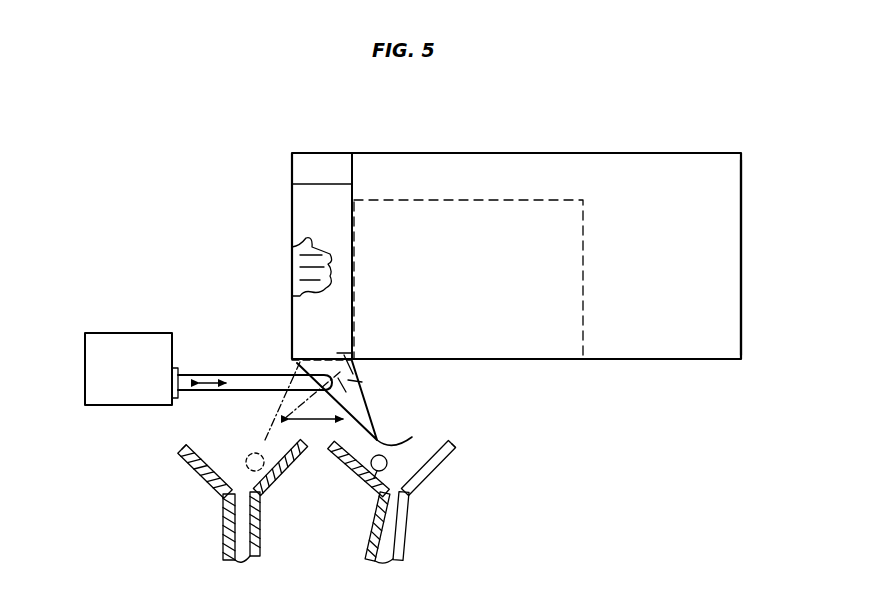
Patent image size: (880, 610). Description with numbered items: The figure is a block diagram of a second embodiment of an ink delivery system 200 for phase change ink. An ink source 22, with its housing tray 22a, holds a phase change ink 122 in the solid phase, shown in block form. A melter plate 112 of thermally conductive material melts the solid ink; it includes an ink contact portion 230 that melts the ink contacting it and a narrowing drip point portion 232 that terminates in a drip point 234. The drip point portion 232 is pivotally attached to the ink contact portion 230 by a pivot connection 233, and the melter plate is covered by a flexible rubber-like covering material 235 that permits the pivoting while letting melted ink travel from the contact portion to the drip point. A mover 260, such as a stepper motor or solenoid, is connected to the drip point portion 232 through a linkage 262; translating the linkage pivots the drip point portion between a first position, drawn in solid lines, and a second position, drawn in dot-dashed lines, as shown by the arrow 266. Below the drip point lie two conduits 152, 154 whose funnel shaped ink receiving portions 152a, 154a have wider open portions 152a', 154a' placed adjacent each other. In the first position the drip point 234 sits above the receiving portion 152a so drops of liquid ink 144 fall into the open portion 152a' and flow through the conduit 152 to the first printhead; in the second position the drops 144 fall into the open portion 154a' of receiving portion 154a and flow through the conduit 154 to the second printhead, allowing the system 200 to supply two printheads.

The ink delivery system 200 is at (167, 126).
The ink source 22 is at (735, 152).
The tray 22a is at (741, 212).
The melter plate 112 is at (323, 177).
The cyan phase change ink 122 is at (490, 292).
The ink contact portion 230 is at (292, 273).
The pivot connection 233 is at (355, 360).
The covering material 235 is at (356, 385).
The drip point portion 232 is at (370, 413).
The drip point 234 is at (411, 431).
The mover 260 is at (148, 376).
The linkage 262 is at (244, 380).
The arrow 266 is at (332, 421).
The second conduit 154 is at (208, 506).
The ink receiving portion of second conduit 154a is at (170, 475).
The open portion of second conduit receiving portion 154a' is at (155, 430).
The drops of liquid ink 144 is at (364, 487).
The first conduit 152 is at (429, 503).
The ink receiving portion of first conduit 152a is at (466, 473).
The open portion of first conduit receiving portion 152a' is at (478, 453).